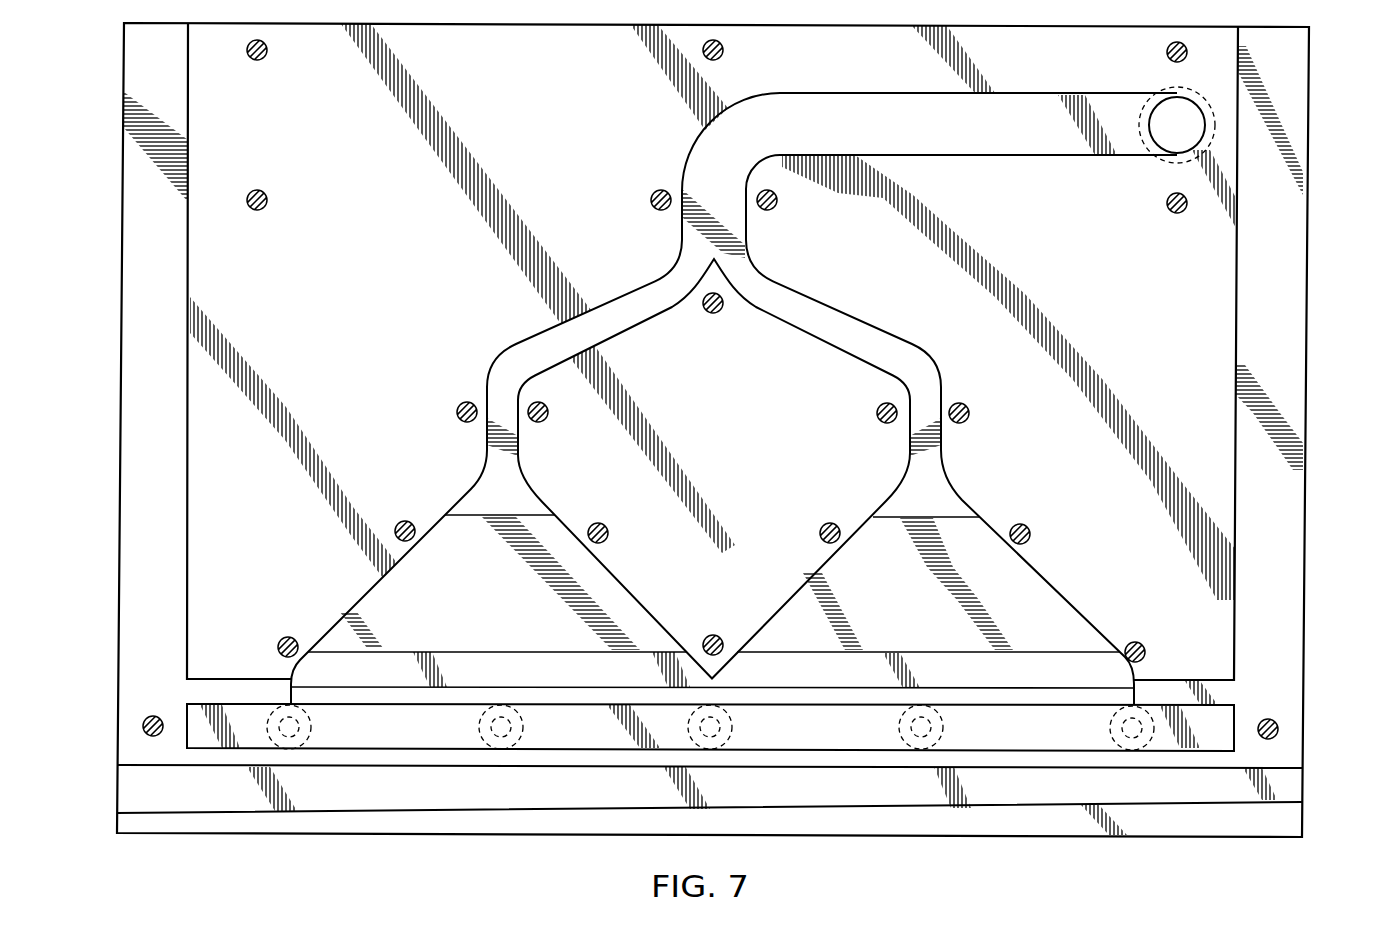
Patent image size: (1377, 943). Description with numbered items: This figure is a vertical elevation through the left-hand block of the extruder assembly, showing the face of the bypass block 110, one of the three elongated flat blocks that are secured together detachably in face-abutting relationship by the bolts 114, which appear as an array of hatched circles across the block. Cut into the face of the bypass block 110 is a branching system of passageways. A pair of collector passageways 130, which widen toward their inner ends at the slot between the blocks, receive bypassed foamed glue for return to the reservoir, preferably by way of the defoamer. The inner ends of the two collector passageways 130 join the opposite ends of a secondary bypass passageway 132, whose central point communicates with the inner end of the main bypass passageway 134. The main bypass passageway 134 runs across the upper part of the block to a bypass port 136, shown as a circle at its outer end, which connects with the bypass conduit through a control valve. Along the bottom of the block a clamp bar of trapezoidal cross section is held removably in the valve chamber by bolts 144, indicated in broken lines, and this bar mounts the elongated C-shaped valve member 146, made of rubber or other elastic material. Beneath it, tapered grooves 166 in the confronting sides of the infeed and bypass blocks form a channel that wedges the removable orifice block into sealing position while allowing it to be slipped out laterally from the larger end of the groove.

The bypass block 110 is at (140, 416).
The bolts 114 is at (262, 61).
The collector passageways 130 is at (400, 598).
The secondary bypass passageway 132 is at (600, 323).
The main bypass passageway 134 is at (918, 115).
The bypass port 136 is at (1150, 126).
The bolts 144 is at (482, 718).
The valve member 146 is at (605, 728).
The tapered grooves 166 is at (865, 808).